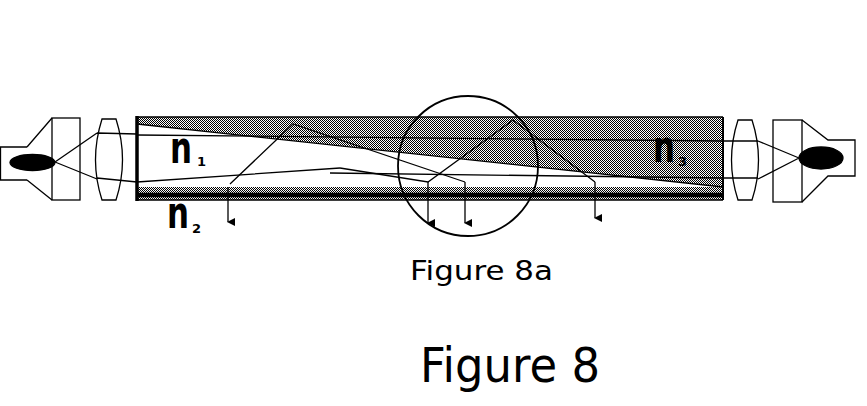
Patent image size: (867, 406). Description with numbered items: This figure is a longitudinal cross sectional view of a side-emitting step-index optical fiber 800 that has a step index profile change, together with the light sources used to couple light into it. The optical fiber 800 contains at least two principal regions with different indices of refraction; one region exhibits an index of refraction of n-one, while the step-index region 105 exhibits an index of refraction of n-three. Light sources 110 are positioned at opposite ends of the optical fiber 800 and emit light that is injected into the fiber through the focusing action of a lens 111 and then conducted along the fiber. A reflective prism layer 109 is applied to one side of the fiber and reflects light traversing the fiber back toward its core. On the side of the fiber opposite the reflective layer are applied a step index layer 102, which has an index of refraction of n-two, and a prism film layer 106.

The optical fiber 800 is at (389, 165).
The step index layer 102 is at (138, 202).
The step-index region 105 is at (630, 132).
The prism film layer 106 is at (702, 200).
The reflective prism layer 109 is at (157, 117).
The light sources 110 is at (780, 118).
The lens 111 is at (750, 200).